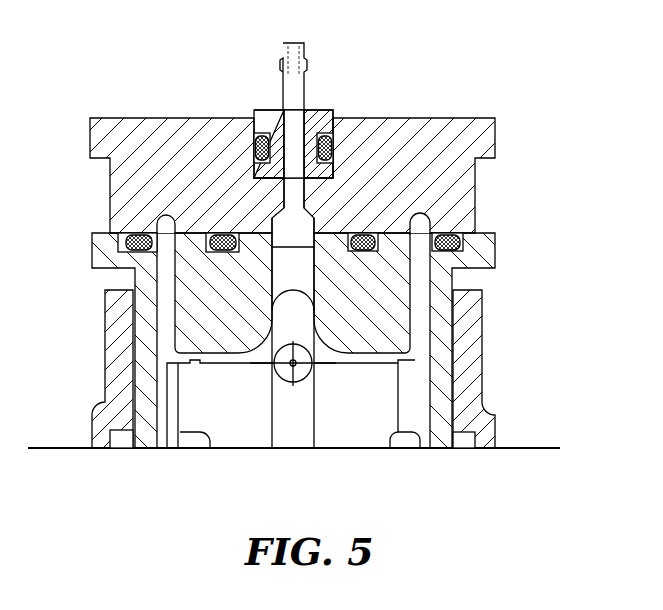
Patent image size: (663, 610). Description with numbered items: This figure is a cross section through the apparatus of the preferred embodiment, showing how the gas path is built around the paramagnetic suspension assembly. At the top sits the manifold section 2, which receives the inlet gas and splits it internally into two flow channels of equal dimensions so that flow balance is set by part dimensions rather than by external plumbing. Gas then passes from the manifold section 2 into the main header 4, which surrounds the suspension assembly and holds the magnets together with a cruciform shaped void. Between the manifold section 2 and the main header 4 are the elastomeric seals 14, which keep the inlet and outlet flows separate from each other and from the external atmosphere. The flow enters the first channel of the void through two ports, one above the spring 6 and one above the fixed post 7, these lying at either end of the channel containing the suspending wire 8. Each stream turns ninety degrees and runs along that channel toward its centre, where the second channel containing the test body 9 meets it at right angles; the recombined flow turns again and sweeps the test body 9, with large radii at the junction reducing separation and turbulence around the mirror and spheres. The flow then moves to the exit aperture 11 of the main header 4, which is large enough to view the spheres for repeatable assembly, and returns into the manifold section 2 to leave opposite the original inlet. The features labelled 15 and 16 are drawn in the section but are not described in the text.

The manifold section 2 is at (496, 138).
The main header 4 is at (496, 250).
The spring 6 is at (420, 338).
The fixed post 7 is at (167, 337).
The suspending wire 8 is at (258, 366).
The test body 9 is at (289, 383).
The exit aperture 11 is at (309, 278).
The elastomeric seals 14 is at (447, 233).
The support surface 15 is at (351, 410).
The pin 16 is at (293, 43).